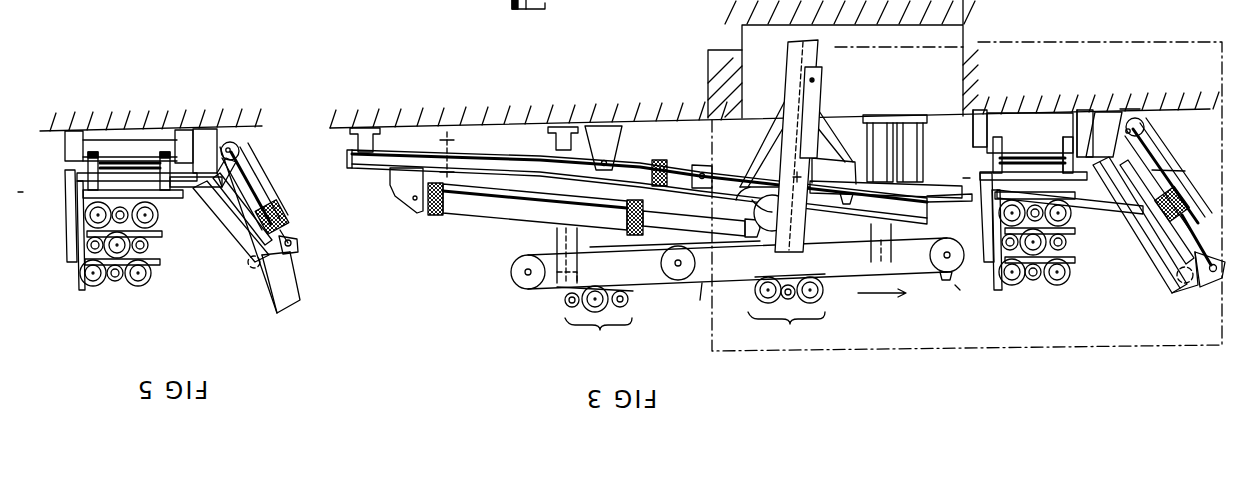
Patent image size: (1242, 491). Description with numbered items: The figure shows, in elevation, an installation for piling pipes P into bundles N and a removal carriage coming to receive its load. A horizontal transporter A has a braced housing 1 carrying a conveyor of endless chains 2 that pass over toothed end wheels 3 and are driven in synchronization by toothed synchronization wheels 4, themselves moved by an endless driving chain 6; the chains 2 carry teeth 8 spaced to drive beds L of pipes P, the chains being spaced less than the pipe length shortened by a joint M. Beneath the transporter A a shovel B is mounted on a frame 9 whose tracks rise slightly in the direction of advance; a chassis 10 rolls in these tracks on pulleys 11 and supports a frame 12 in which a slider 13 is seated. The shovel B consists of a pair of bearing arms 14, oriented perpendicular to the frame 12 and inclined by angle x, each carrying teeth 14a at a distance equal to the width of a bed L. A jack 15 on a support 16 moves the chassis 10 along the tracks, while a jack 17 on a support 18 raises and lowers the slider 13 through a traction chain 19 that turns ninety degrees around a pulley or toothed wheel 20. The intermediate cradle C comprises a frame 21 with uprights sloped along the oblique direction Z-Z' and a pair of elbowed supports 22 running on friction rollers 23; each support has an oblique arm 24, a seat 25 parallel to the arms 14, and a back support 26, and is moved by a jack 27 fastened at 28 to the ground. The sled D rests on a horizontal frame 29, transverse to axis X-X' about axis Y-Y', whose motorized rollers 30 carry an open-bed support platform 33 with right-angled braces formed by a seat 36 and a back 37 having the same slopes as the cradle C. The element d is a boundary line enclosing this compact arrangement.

In FIG. 3, the housing 1 is at (882, 302).
In FIG. 3, the conveyor chains 2 is at (658, 282).
In FIG. 3, the toothed end wheels 3 is at (510, 266).
In FIG. 3, the toothed synchronization wheels 4 is at (680, 282).
In FIG. 3, the endless driving chain 6 is at (352, 174).
In FIG. 3, the teeth 8 is at (750, 290).
In FIG. 3, the frame 9 is at (962, 300).
In FIG. 3, the chassis 10 is at (639, 176).
In FIG. 3, the pulleys 11 is at (500, 162).
In FIG. 3, the frame 12 is at (786, 100).
In FIG. 3, the slider 13 is at (818, 100).
In FIG. 3, the bearing arms 14 is at (948, 197).
In FIG. 3, the teeth 14a is at (841, 181).
In FIG. 3, the jack 15 is at (640, 166).
In FIG. 3, the support 16 is at (606, 125).
In FIG. 3, the jack 17 is at (463, 212).
In FIG. 3, the support 18 is at (405, 192).
In FIG. 3, the traction chain 19 is at (770, 156).
In FIG. 3, the pulley or toothed wheel 20 is at (756, 170).
In FIG. 5, the frame 21 is at (290, 306).
In FIG. 3, the frame 21 is at (1138, 142).
In FIG. 5, the elbowed supports 22 is at (243, 250).
In FIG. 3, the elbowed supports 22 is at (1147, 238).
In FIG. 5, the friction rollers 23 is at (267, 190).
In FIG. 3, the friction rollers 23 is at (1185, 223).
In FIG. 5, the oblique arm 24 is at (236, 236).
In FIG. 3, the oblique arm 24 is at (1163, 252).
In FIG. 5, the seat 25 is at (195, 200).
In FIG. 5, the back support 26 is at (70, 268).
In FIG. 3, the back support 26 is at (992, 280).
In FIG. 5, the jack 27 is at (248, 172).
In FIG. 3, the jack 27 is at (1152, 158).
In FIG. 3, the fastening point 28 is at (1130, 110).
In FIG. 3, the frame 29 is at (1085, 125).
In FIG. 3, the support rollers 30 is at (1058, 150).
In FIG. 3, the support platform 33 is at (1010, 130).
In FIG. 5, the seat 36 is at (178, 205).
In FIG. 3, the seat 36 is at (1035, 170).
In FIG. 5, the back support 37 is at (92, 288).
In FIG. 3, the back support 37 is at (982, 258).
In FIG. 3, the horizontal transporter A is at (694, 307).
In FIG. 3, the shovel B is at (841, 98).
In FIG. 5, the intermediate cradle C is at (248, 288).
In FIG. 3, the intermediate cradle C is at (1160, 284).
In FIG. 3, the sled D is at (970, 180).
In FIG. 3, the bed of pipes L is at (695, 329).
In FIG. 5, the joint M is at (100, 288).
In FIG. 5, the bundle of pipes N is at (144, 302).
In FIG. 3, the bundle of pipes N is at (1037, 300).
In FIG. 3, the pipes P is at (560, 292).
In FIG. 3, the axis XX' X is at (443, 152).
In FIG. 3, the axis YY' Y is at (1167, 176).
In FIG. 3, the direction Z-Z' Z is at (1100, 150).
In FIG. 3, the boundary d is at (724, 50).